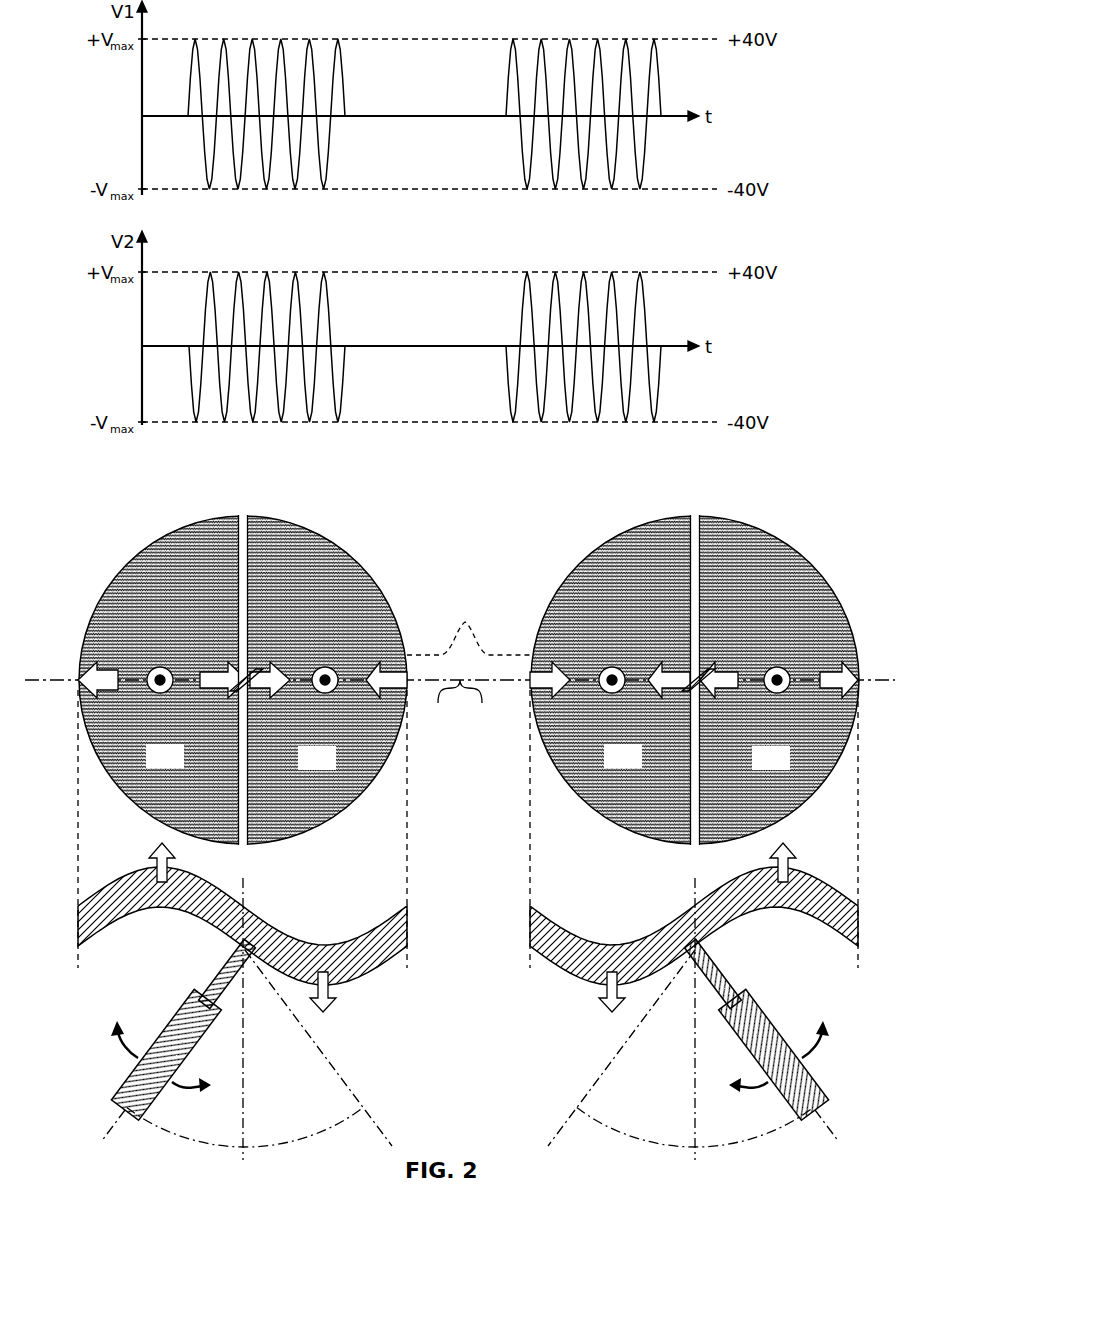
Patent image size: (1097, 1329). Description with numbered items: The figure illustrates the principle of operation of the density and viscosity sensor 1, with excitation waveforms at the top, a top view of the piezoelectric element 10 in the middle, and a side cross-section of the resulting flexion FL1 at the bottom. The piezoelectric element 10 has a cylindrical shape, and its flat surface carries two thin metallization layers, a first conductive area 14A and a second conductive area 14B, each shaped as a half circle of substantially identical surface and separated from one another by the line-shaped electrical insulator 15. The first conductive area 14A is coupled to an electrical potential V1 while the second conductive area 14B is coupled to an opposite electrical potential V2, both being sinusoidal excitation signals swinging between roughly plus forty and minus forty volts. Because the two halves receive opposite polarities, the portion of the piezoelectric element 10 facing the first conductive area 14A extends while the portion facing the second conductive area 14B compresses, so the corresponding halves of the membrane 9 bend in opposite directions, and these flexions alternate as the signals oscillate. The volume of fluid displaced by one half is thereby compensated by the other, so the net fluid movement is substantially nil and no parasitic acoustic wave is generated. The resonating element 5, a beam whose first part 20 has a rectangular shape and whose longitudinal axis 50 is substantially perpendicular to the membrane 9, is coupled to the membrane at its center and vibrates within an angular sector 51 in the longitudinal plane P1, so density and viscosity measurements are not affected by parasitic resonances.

The density and viscosity sensor 1 is at (469, 656).
The piezoelectric element 10 is at (315, 526).
The electrical insulator 15 is at (243, 514).
The first conductive area 14A is at (182, 766).
The second conductive area 14B is at (334, 768).
The electrical potential V1 is at (548, 567).
The opposite electrical potential V2 is at (843, 566).
The first part 20 is at (744, 1128).
The longitudinal plane P1 is at (460, 700).
The flexion FL1 is at (446, 940).
The membrane 9 is at (340, 984).
The resonating element 5 is at (469, 873).
The longitudinal axis 50 is at (103, 1138).
The angular sector 51 is at (283, 1147).